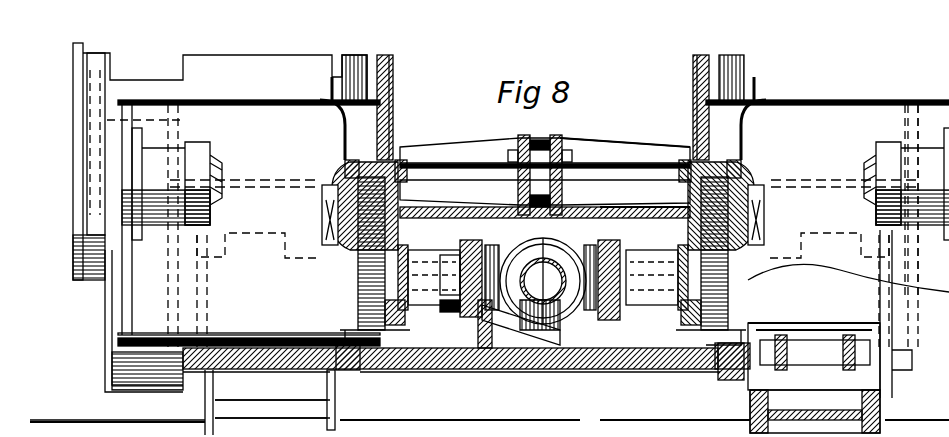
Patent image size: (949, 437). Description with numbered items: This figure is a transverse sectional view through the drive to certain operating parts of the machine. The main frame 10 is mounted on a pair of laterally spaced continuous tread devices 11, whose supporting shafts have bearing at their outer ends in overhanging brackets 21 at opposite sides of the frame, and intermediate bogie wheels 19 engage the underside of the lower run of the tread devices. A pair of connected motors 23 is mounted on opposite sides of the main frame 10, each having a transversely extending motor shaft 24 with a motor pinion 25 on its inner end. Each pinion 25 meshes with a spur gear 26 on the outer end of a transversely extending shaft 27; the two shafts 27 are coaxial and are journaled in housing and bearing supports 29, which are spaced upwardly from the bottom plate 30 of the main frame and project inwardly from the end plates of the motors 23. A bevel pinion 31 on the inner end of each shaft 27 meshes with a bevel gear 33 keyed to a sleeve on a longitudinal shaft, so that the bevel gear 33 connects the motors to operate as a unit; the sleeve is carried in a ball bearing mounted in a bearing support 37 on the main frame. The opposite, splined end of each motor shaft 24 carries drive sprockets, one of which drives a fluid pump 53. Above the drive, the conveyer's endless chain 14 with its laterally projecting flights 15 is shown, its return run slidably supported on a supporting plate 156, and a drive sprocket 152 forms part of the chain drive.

The main frame 10 is at (545, 370).
The continuous tread device 11 is at (336, 404).
The endless chain 14 is at (543, 140).
The flight 15 is at (618, 146).
The bogie wheel 19 is at (830, 322).
The overhanging bracket 21 is at (205, 378).
The motor 23 is at (272, 96).
The motor shaft 24 is at (322, 190).
The motor pinion 25 is at (396, 150).
The spur gear 26 is at (372, 370).
The transversely extending shaft 27 is at (420, 255).
The housing and bearing support 29 is at (410, 316).
The bottom plate 30 is at (620, 372).
The bevel pinion 31 is at (482, 250).
The bevel gear 33 is at (560, 318).
The bearing support 37 is at (495, 350).
The fluid pump 53 is at (212, 146).
The drive sprocket 152 is at (395, 58).
The supporting plate 156 is at (650, 215).